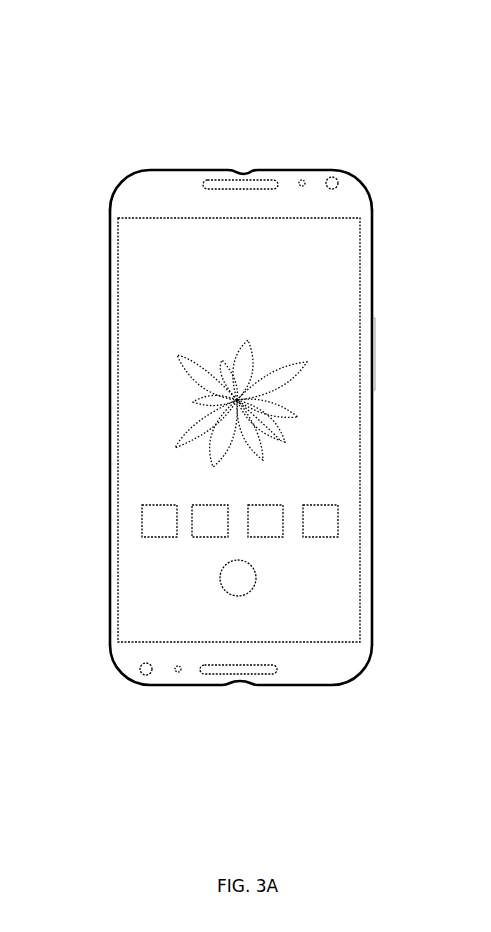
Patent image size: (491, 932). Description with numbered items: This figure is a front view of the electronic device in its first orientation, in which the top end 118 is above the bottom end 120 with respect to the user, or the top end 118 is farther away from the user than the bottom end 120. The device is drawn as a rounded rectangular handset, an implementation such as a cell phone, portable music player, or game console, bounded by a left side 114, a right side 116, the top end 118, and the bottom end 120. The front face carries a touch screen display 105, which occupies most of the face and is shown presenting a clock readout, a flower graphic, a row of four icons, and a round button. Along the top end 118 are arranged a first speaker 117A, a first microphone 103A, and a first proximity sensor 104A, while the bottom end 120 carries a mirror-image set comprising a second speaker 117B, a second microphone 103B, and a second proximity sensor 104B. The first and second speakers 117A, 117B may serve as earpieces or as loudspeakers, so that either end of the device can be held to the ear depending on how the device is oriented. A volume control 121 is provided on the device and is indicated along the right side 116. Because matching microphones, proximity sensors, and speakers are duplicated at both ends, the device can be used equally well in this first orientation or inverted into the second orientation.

The touch screen display 105 is at (181, 610).
The first microphone 103A is at (303, 178).
The second microphone 103B is at (178, 675).
The first proximity sensor 104A is at (340, 175).
The second proximity sensor 104B is at (146, 676).
The left side 114 is at (104, 412).
The right side 116 is at (490, 308).
The first speaker 117A is at (218, 180).
The second speaker 117B is at (262, 676).
The top end 118 is at (270, 55).
The bottom end 120 is at (243, 758).
The volume control 121 is at (373, 341).